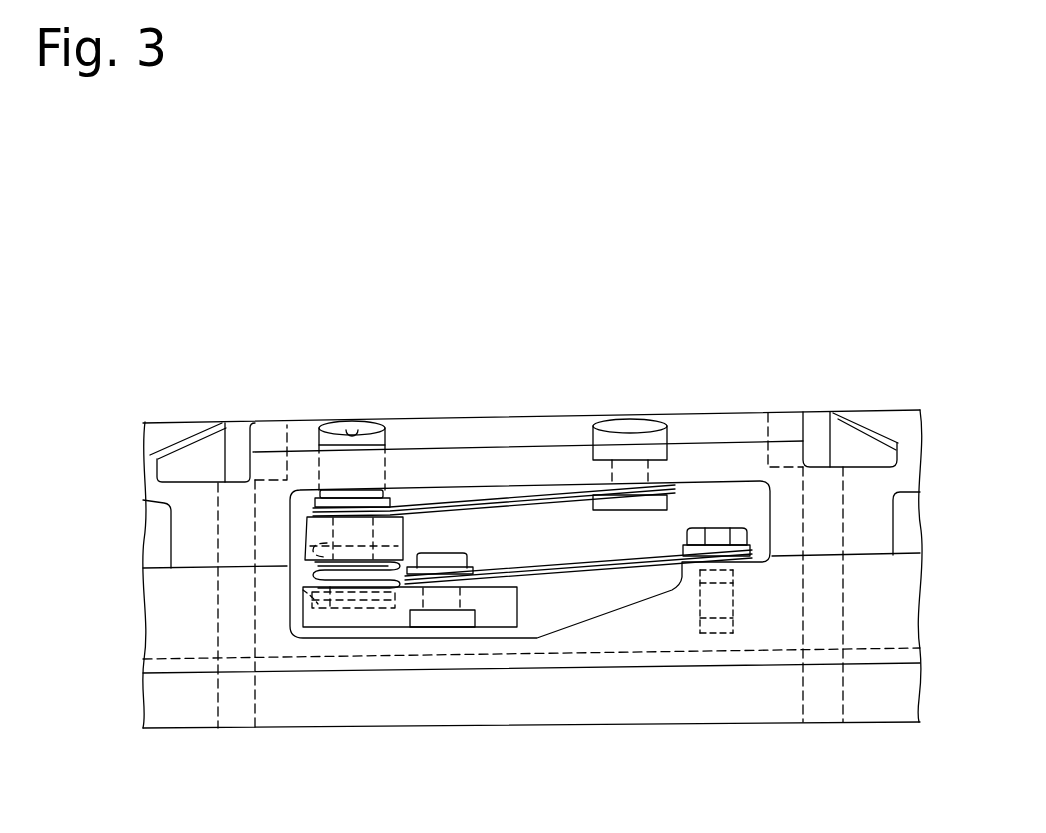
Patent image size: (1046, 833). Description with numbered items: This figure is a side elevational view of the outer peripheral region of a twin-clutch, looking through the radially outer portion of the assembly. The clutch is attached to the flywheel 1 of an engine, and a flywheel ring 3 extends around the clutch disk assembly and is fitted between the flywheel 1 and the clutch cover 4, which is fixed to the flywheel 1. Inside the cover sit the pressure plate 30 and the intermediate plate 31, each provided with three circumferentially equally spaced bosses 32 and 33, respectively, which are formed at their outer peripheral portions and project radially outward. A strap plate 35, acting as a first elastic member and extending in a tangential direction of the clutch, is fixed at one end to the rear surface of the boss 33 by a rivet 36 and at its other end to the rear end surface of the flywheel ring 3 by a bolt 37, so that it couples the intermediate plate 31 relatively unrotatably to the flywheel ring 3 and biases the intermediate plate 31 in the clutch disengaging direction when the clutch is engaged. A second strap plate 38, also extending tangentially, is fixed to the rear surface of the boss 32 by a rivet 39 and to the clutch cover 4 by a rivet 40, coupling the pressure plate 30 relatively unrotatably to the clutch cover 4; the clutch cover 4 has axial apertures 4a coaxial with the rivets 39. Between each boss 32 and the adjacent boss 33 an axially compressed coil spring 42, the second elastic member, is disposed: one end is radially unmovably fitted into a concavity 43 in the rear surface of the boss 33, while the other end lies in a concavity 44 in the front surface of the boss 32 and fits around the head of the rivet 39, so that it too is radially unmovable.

The flywheel 1 is at (173, 694).
The flywheel ring 3 is at (172, 628).
The clutch cover 4 is at (183, 505).
The axial apertures 4a is at (345, 430).
The pressure plate 30 is at (334, 471).
The intermediate plate 31 is at (322, 696).
The boss 32 is at (313, 535).
The boss 33 is at (338, 618).
The strap plate 35 is at (600, 575).
The rivet 36 is at (432, 563).
The bolt 37 is at (715, 533).
The strap plate 38 is at (508, 497).
The rivet 39 is at (383, 497).
The rivet 40 is at (632, 500).
The coil spring 42 is at (368, 575).
The concavity 43 is at (312, 603).
The concavity 44 is at (316, 570).